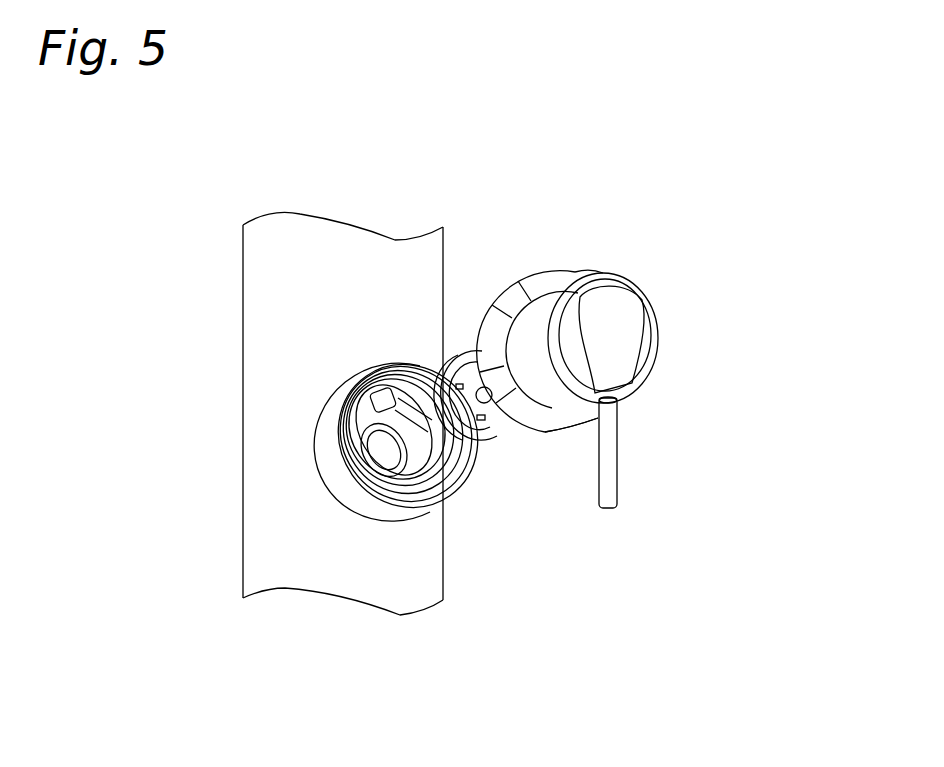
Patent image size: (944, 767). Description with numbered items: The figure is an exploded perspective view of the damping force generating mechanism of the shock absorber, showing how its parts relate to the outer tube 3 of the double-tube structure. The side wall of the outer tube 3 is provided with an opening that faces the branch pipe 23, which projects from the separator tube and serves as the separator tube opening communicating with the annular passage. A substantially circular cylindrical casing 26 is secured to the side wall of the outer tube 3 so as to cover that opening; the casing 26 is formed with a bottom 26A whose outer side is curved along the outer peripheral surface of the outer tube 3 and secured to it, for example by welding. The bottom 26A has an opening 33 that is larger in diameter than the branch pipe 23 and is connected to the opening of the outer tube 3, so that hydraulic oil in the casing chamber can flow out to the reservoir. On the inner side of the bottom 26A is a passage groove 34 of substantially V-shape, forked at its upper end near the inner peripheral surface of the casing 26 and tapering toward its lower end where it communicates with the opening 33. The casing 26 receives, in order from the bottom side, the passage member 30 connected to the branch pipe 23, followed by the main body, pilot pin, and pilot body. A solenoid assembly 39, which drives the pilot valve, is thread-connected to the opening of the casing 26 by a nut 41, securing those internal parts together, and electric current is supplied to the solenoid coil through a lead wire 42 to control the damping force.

The outer tube 3 is at (318, 258).
The branch pipe 23 is at (415, 503).
The casing 26 is at (345, 492).
The bottom 26A is at (458, 478).
The passage member 30 is at (465, 347).
The opening 33 is at (365, 455).
The passage groove 34 is at (436, 366).
The solenoid assembly 39 is at (640, 290).
The nut 41 is at (532, 418).
The lead wire 42 is at (608, 442).